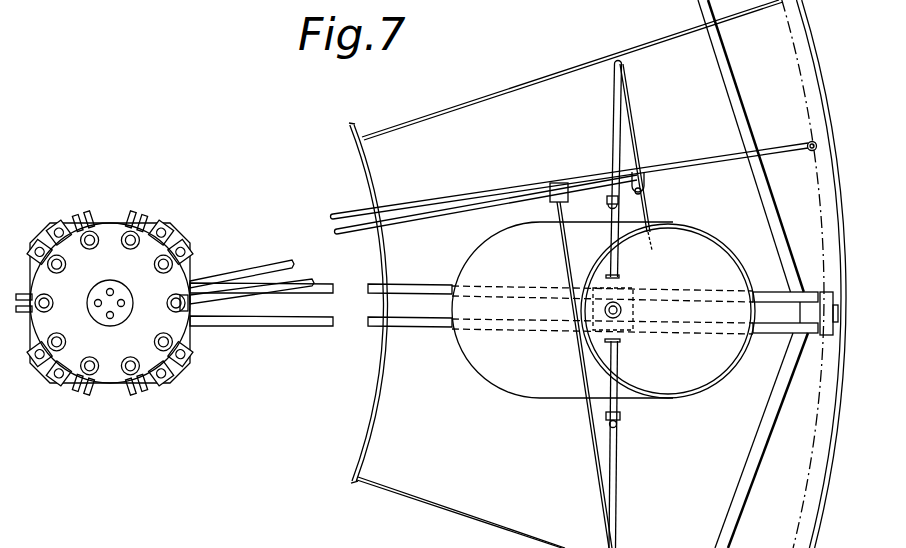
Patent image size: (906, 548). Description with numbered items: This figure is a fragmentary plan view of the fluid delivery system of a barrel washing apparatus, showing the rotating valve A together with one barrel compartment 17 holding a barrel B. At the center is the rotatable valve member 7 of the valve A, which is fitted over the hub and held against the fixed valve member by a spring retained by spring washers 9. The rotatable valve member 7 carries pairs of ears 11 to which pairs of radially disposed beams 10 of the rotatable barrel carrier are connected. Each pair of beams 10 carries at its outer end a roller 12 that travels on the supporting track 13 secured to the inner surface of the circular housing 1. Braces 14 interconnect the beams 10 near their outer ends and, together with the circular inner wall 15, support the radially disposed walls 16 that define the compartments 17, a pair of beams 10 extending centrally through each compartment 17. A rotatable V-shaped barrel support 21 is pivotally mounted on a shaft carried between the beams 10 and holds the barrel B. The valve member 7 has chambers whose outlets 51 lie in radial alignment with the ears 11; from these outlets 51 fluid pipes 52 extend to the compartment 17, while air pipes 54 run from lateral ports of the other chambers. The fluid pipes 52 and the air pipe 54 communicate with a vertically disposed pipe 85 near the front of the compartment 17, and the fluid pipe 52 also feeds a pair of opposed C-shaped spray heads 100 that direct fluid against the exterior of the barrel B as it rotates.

The valve A is at (104, 302).
The barrel B is at (510, 260).
The circular housing 1 is at (825, 500).
The rotatable valve member 7 is at (110, 303).
The spring washers 9 is at (117, 290).
The radially disposed beams 10 is at (368, 312).
The ears 11 is at (82, 319).
The roller 12 is at (825, 280).
The supporting track 13 is at (825, 393).
The braces 14 is at (730, 101).
The circular inner wall 15 is at (374, 193).
The radially disposed walls 16 is at (531, 82).
The compartments 17 is at (562, 327).
The V-shaped barrel support 21 is at (630, 290).
The outlets 51 is at (165, 261).
The pipes 52 is at (314, 281).
The pipes 54 is at (280, 262).
The vertically disposed pipe 85 is at (809, 142).
The C-shaped pipe sections or spray heads 100 is at (616, 134).